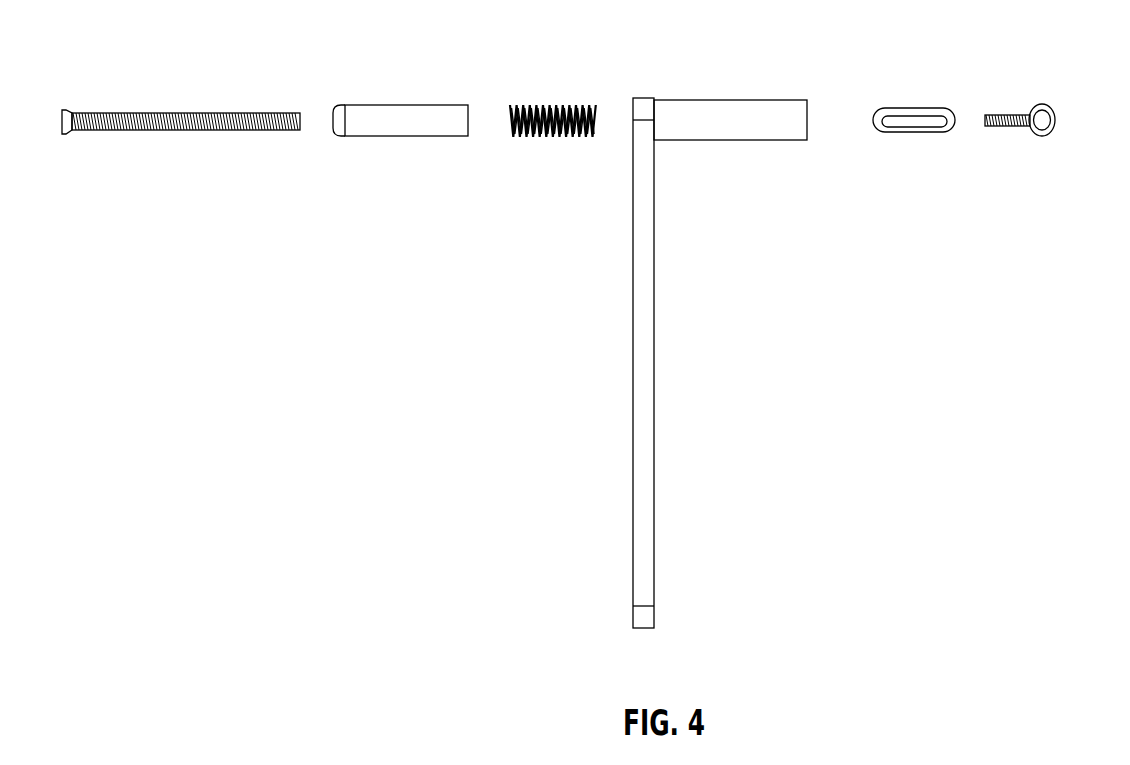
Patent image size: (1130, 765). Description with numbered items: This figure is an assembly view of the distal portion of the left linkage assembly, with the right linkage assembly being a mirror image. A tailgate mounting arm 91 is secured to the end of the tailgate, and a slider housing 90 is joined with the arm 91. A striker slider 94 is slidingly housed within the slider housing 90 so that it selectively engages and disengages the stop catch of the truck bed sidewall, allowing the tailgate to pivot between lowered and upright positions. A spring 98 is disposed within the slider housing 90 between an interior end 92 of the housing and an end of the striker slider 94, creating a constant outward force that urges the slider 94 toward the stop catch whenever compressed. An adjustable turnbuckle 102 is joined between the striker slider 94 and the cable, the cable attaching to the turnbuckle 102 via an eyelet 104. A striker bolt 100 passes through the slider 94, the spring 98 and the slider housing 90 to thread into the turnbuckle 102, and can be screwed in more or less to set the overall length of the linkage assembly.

The slider housing 90 is at (755, 329).
The tailgate mounting arm 91 is at (649, 443).
The interior end of the slider housing 92 is at (809, 107).
The striker slider 94 is at (400, 103).
The spring 98 is at (552, 103).
The striker bolt 100 is at (238, 113).
The adjustable turnbuckle 102 is at (943, 108).
The eyelet 104 is at (1047, 105).